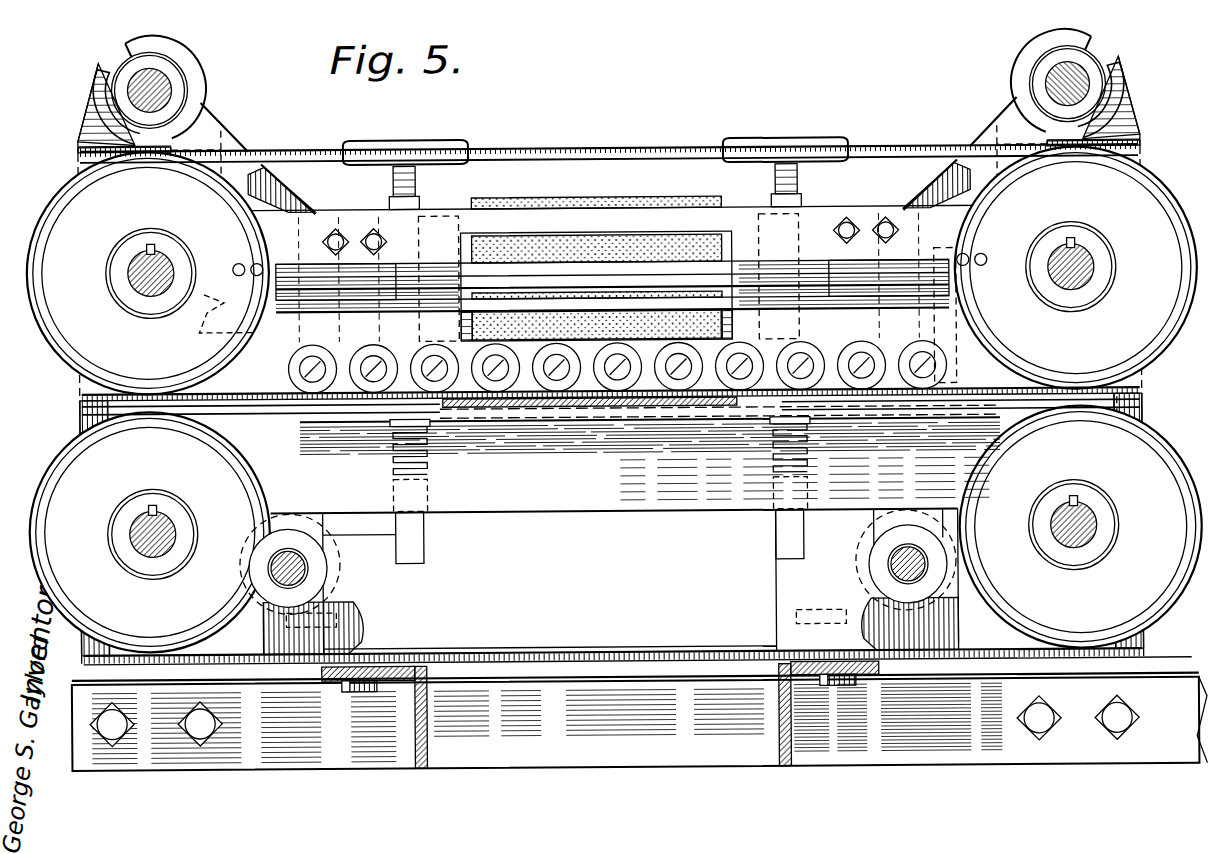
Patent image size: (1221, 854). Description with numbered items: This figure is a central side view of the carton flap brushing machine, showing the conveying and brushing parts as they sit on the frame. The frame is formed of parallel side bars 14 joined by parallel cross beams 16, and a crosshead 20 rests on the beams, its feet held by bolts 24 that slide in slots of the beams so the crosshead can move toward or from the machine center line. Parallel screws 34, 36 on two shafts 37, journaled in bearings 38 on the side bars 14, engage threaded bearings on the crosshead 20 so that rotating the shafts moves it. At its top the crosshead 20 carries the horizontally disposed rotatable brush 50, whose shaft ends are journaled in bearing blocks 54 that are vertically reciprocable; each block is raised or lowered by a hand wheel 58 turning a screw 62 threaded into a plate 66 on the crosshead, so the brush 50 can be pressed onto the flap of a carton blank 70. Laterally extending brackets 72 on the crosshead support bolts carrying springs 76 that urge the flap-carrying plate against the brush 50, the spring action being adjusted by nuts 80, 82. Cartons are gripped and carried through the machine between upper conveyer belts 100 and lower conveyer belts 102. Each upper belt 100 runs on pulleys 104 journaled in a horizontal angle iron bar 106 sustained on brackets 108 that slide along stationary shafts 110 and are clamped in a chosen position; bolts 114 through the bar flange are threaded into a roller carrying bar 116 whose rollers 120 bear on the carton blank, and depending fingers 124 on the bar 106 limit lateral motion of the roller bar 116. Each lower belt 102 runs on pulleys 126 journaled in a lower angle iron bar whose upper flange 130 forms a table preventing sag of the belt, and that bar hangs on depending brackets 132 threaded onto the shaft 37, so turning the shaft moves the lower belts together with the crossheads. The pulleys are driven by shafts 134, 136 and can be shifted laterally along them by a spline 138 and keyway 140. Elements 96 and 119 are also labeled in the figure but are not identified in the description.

The side bars 14 is at (615, 768).
The cross beams 16 is at (428, 715).
The crosshead 20 is at (410, 578).
The bolts 24 is at (352, 692).
The screw 34 is at (925, 565).
The screw 36 is at (330, 590).
The shafts 37 is at (300, 572).
The bearings 38 is at (300, 630).
The brush 50 is at (630, 206).
The bearing block 54 is at (435, 258).
The hand wheel 58 is at (432, 138).
The screw 62 is at (420, 172).
The plate 66 is at (400, 205).
The carton blank 70 is at (590, 408).
The brackets 72 is at (430, 490).
The springs 76 is at (430, 450).
The nut 80 is at (432, 430).
The nut 82 is at (425, 515).
The end plate 96 is at (945, 365).
The upper conveyer belts 100 is at (628, 150).
The lower conveyer belts 102 is at (348, 410).
The pulleys 104 is at (612, 271).
The horizontal bar 106 is at (868, 212).
The brackets 108 is at (245, 135).
The stationary shafts 110 is at (165, 75).
The bolts 114 is at (380, 258).
The roller carrying bar 116 is at (240, 340).
The bolts 119 is at (870, 250).
The roller 120 is at (320, 337).
The depending fingers 124 is at (285, 260).
The pulleys 126 is at (572, 505).
The upper flange 130 is at (677, 420).
The depending brackets 132 is at (328, 572).
The shaft 134 is at (152, 290).
The shaft 136 is at (153, 550).
The spline 138 is at (157, 247).
The keyway 140 is at (160, 268).